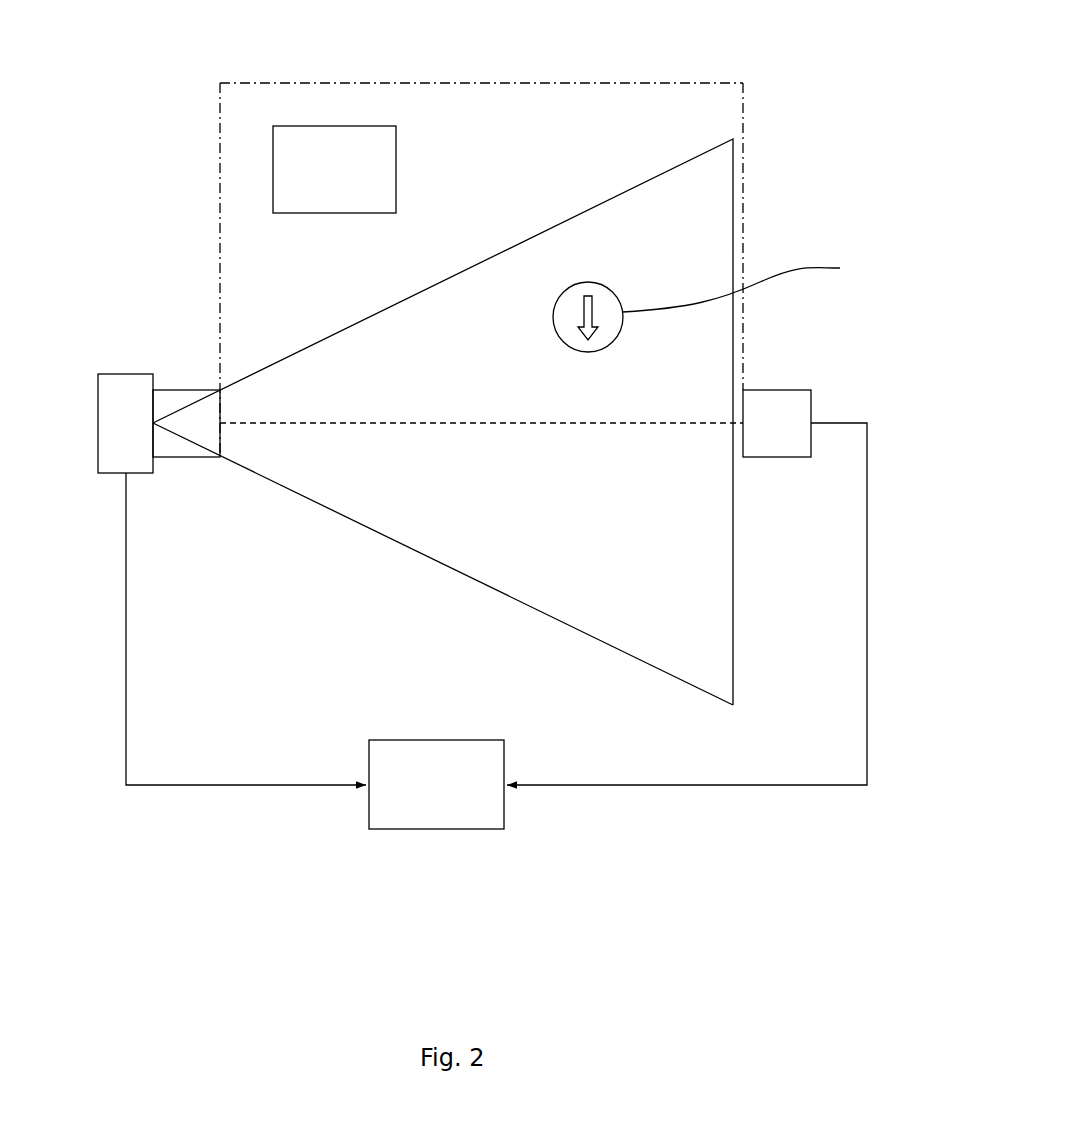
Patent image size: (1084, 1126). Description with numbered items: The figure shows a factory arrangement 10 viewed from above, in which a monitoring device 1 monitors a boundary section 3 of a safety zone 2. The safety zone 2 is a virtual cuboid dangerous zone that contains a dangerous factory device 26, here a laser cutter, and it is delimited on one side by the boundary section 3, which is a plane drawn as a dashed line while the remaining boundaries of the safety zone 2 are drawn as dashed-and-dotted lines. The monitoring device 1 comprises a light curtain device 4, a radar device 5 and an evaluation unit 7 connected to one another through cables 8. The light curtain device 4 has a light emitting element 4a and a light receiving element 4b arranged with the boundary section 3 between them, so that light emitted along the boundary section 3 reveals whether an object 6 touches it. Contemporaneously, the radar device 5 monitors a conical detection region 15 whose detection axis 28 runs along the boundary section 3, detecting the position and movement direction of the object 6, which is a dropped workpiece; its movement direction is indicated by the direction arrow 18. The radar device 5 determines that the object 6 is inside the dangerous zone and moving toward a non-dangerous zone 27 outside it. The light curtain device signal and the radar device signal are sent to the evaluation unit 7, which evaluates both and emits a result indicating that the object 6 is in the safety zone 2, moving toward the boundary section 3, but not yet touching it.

The monitoring device 1 is at (99, 565).
The safety zone 2 is at (743, 173).
The boundary section 3 is at (318, 432).
The light curtain device 4 is at (841, 402).
The light emitting element 4a is at (162, 403).
The light receiving element 4b is at (768, 457).
The radar device 5 is at (107, 374).
The object 6 is at (600, 284).
The evaluation unit 7 is at (408, 829).
The cables 8 is at (126, 648).
The factory arrangement 10 is at (833, 41).
The detection region 15 is at (542, 613).
The direction arrow 18 is at (753, 283).
The factory device 26 is at (388, 126).
The non-dangerous zone 27 is at (353, 583).
The detection axis 28 is at (433, 422).